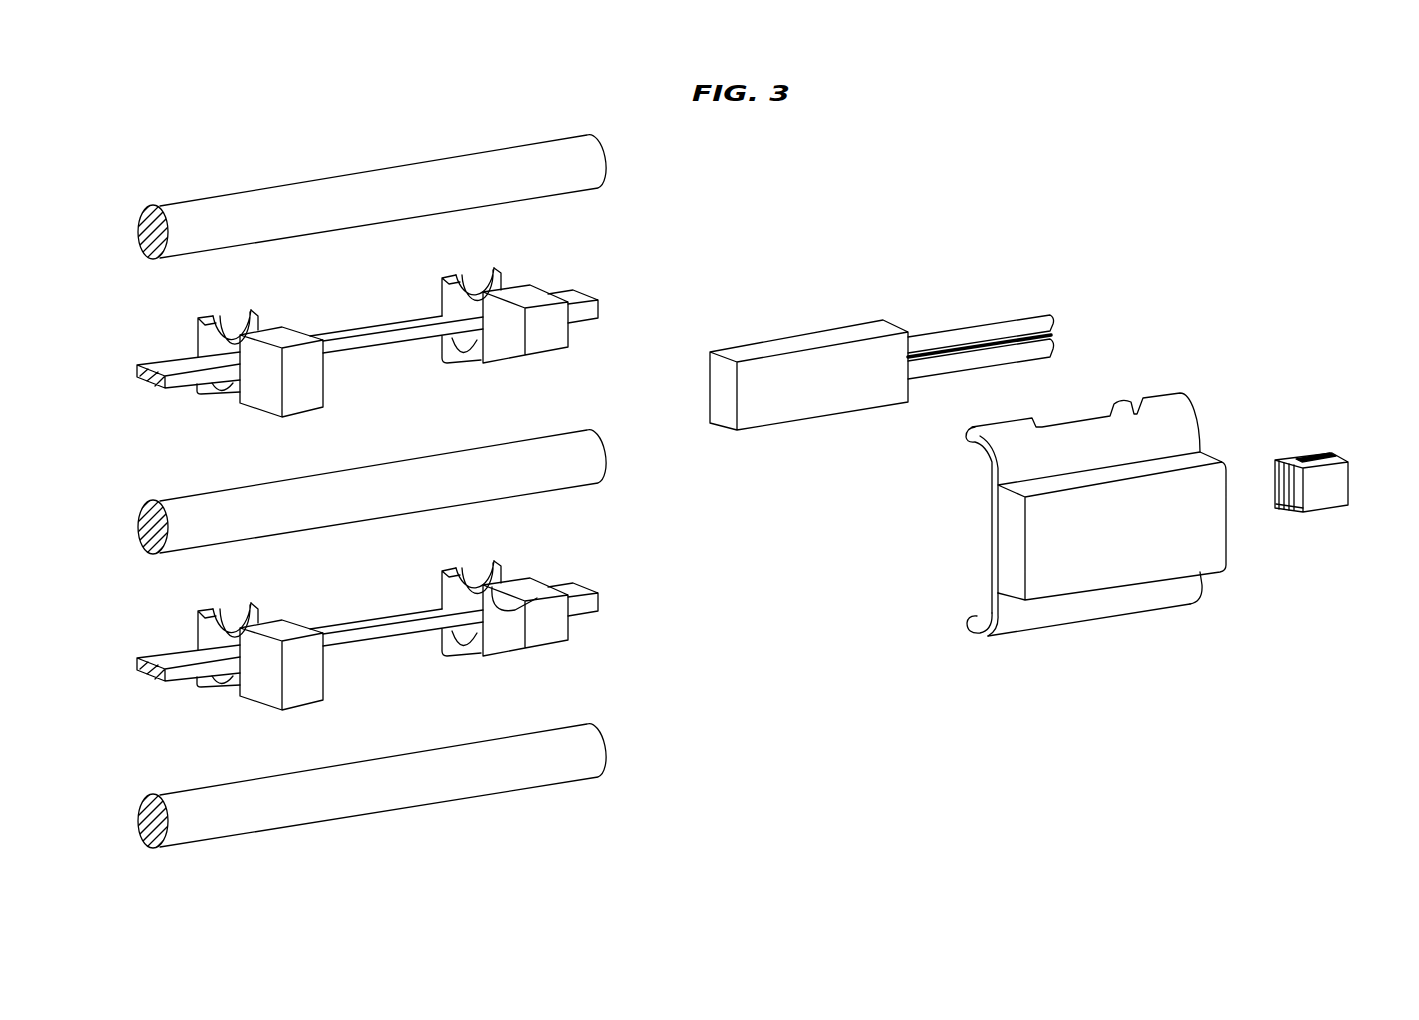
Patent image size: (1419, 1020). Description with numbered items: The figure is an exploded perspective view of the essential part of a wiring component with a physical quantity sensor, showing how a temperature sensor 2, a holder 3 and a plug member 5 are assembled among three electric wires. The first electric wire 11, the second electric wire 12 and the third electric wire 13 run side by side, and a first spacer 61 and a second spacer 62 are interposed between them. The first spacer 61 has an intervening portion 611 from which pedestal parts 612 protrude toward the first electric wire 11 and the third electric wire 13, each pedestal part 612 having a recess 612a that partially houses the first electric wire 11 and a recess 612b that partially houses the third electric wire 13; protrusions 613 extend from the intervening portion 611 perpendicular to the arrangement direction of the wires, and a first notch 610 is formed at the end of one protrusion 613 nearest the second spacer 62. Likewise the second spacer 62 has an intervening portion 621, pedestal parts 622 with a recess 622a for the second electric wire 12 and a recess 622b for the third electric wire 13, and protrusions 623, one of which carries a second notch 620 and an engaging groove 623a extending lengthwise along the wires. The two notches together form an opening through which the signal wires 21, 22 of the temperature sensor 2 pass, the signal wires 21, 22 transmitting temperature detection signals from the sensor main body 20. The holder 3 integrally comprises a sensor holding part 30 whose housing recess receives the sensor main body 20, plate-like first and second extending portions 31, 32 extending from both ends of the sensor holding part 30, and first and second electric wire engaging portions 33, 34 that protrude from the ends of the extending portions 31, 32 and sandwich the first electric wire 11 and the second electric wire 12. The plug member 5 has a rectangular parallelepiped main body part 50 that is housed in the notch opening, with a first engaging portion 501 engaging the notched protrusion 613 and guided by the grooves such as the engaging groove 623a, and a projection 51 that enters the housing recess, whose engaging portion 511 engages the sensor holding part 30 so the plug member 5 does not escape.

The first electric wire 11 is at (170, 202).
The second electric wire 12 is at (170, 497).
The third electric wire 13 is at (170, 791).
The first spacer 61 is at (395, 337).
The first notch 610 is at (528, 368).
The intervening portion 611 is at (375, 343).
The pedestal part 612 is at (205, 328).
The recess 612a is at (250, 320).
The recess 612b is at (218, 394).
The protrusion 613 is at (317, 385).
The second spacer 62 is at (399, 624).
The second notch 620 is at (527, 565).
The intervening portion 621 is at (396, 611).
The pedestal part 622 is at (324, 597).
The recess 622a is at (347, 679).
The recess 622b is at (353, 577).
The protrusion 623 is at (418, 645).
The engaging groove 623a is at (583, 571).
The temperature sensor 2 is at (878, 368).
The sensor main body 20 is at (818, 408).
The signal wire 21 is at (997, 330).
The signal wire 22 is at (988, 358).
The holder 3 is at (1092, 493).
The sensor holding part 30 is at (1203, 553).
The first extending portion 31 is at (1187, 442).
The second extending portion 32 is at (1085, 610).
The first electric wire engaging portion 33 is at (985, 428).
The second electric wire engaging portion 34 is at (970, 633).
The plug member 5 is at (1318, 478).
The main body part 50 is at (1323, 495).
The projection 51 is at (1275, 468).
The first engaging portion 501 is at (1312, 452).
The engaging portion 511 is at (1280, 508).